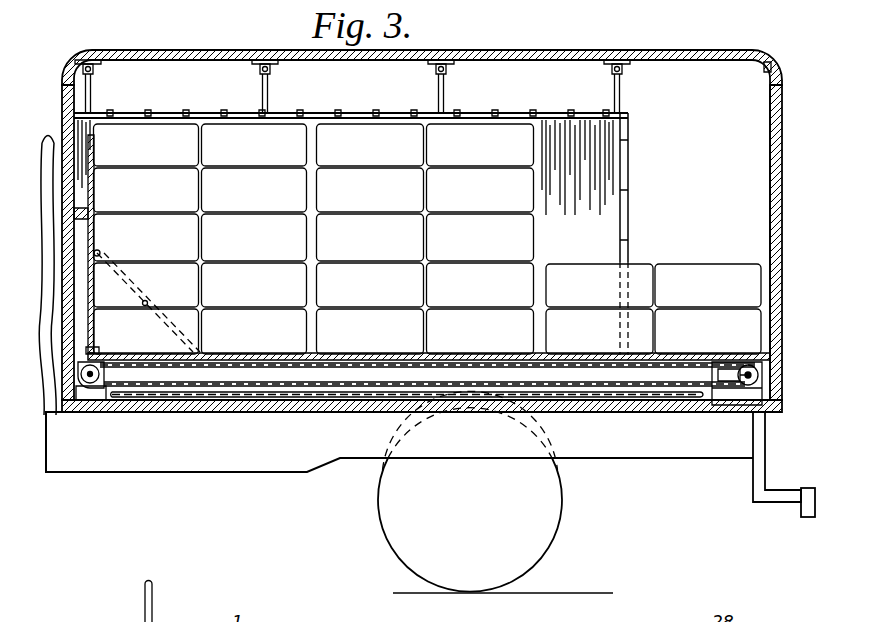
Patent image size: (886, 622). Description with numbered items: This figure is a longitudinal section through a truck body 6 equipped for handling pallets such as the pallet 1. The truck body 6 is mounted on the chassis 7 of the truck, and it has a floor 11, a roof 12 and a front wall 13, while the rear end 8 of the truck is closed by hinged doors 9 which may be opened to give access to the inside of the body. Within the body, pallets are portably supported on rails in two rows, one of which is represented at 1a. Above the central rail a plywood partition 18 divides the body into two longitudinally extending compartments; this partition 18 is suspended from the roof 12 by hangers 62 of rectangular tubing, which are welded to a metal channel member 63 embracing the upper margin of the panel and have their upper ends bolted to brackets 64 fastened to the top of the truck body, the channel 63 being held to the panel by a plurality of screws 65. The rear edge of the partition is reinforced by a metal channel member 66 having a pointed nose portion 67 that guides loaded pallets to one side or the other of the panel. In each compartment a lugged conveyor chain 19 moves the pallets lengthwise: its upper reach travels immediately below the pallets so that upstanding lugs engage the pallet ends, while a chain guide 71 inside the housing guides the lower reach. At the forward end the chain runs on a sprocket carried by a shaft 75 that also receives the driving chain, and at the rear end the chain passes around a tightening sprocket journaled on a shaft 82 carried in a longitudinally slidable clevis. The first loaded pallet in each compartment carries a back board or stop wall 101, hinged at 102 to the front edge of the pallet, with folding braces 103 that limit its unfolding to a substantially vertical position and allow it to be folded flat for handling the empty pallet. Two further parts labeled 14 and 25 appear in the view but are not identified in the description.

The pallet 1 is at (378, 356).
The row of pallets 1a is at (774, 358).
The truck body 6 is at (423, 235).
The chassis 7 is at (243, 462).
The rear end 8 is at (56, 76).
The hinged doors 9 is at (786, 248).
The floor 11 is at (640, 402).
The roof 12 is at (576, 50).
The front wall 13 is at (68, 134).
The side wall 14 is at (750, 172).
The partition 18 is at (592, 127).
The conveyor chains 19 is at (238, 398).
The corner strip 25 is at (766, 72).
The hangers 62 is at (444, 88).
The metal channel member 63 is at (540, 117).
The brackets 64 is at (437, 66).
The screws 65 is at (494, 118).
The metal channel member 66 is at (628, 237).
The pointed nose portion 67 is at (629, 166).
The chain guide 71 is at (170, 398).
The shaft 75 is at (80, 392).
The shaft 82 is at (748, 385).
The back board or stop wall 101 is at (95, 183).
The hinge connection 102 is at (96, 356).
The folding braces 103 is at (122, 273).